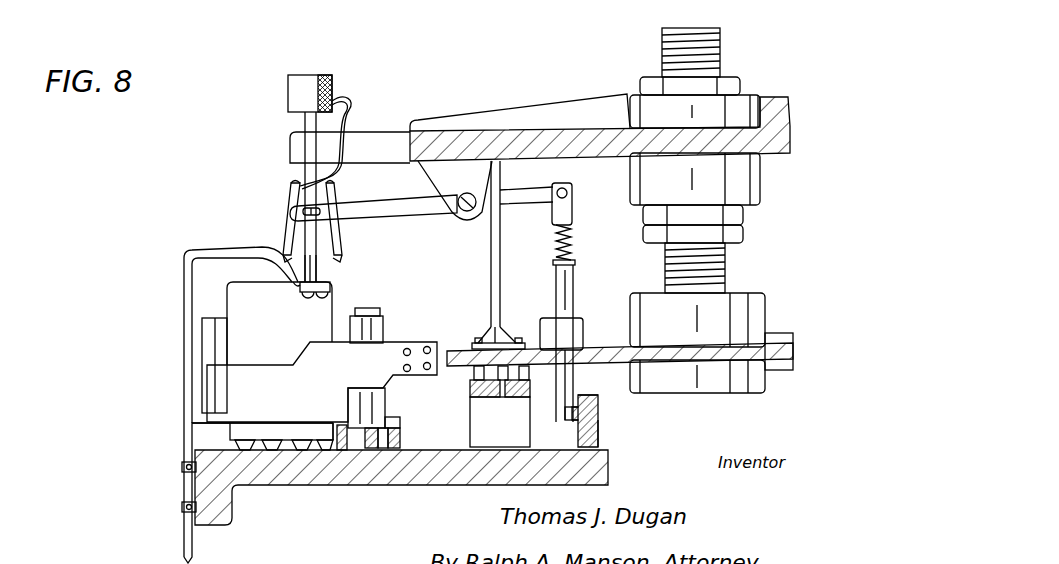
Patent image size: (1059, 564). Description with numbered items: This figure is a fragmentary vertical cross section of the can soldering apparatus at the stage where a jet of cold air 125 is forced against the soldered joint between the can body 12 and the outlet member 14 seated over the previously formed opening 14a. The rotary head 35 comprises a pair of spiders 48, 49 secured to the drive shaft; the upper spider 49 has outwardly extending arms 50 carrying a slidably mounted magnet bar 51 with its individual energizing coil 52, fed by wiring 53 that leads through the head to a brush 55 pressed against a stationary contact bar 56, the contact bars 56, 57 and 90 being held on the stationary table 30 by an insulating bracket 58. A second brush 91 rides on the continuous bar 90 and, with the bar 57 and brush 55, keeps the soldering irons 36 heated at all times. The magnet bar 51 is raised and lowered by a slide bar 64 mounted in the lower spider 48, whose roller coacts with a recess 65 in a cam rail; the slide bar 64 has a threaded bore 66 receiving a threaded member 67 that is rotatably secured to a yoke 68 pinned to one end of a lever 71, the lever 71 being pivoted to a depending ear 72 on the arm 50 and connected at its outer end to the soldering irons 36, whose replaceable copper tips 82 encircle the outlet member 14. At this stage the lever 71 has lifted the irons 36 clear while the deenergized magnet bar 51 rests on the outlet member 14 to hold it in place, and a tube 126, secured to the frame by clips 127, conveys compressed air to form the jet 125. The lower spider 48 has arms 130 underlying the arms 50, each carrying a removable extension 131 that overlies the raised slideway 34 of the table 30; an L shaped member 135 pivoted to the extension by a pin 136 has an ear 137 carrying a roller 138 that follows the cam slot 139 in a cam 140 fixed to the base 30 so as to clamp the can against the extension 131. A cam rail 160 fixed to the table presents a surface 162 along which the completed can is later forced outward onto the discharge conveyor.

The can body 12 is at (279, 323).
The outlet member 14 is at (318, 281).
The opening 14a is at (330, 290).
The stationary table 30 is at (300, 478).
The raised portion 34 is at (322, 452).
The head 35 is at (447, 145).
The soldering irons 36 is at (355, 232).
The spider 48 is at (585, 347).
The spider 49 is at (416, 125).
The arms 50 is at (290, 147).
The magnet bar 51 is at (305, 119).
The energizing coil 52 is at (288, 87).
The wiring 53 is at (500, 183).
The brush 55 is at (472, 378).
The contact bar 56 is at (500, 422).
The contact bar 57 is at (488, 398).
The bracket 58 is at (578, 434).
The slide bar 64 is at (574, 282).
The recess 65 is at (580, 412).
The threaded bore 66 is at (598, 400).
The threaded member 67 is at (598, 427).
The yoke 68 is at (572, 208).
The lever 71 is at (388, 201).
The depending ear 72 is at (455, 190).
The tip 82 is at (333, 272).
The contact bar 90 is at (520, 398).
The brush 91 is at (528, 351).
The jet of cold air 125 is at (297, 284).
The tube 126 is at (228, 248).
The clips 127 is at (182, 467).
The arms 130 is at (452, 345).
The extension 131 is at (314, 391).
The L shaped member 135 is at (210, 350).
The pin 136 is at (380, 310).
The ear 137 is at (388, 416).
The roller 138 is at (400, 424).
The cam slot 139 is at (400, 434).
The cam 140 is at (400, 444).
The cam rail 160 is at (345, 440).
The surface 162 is at (338, 448).